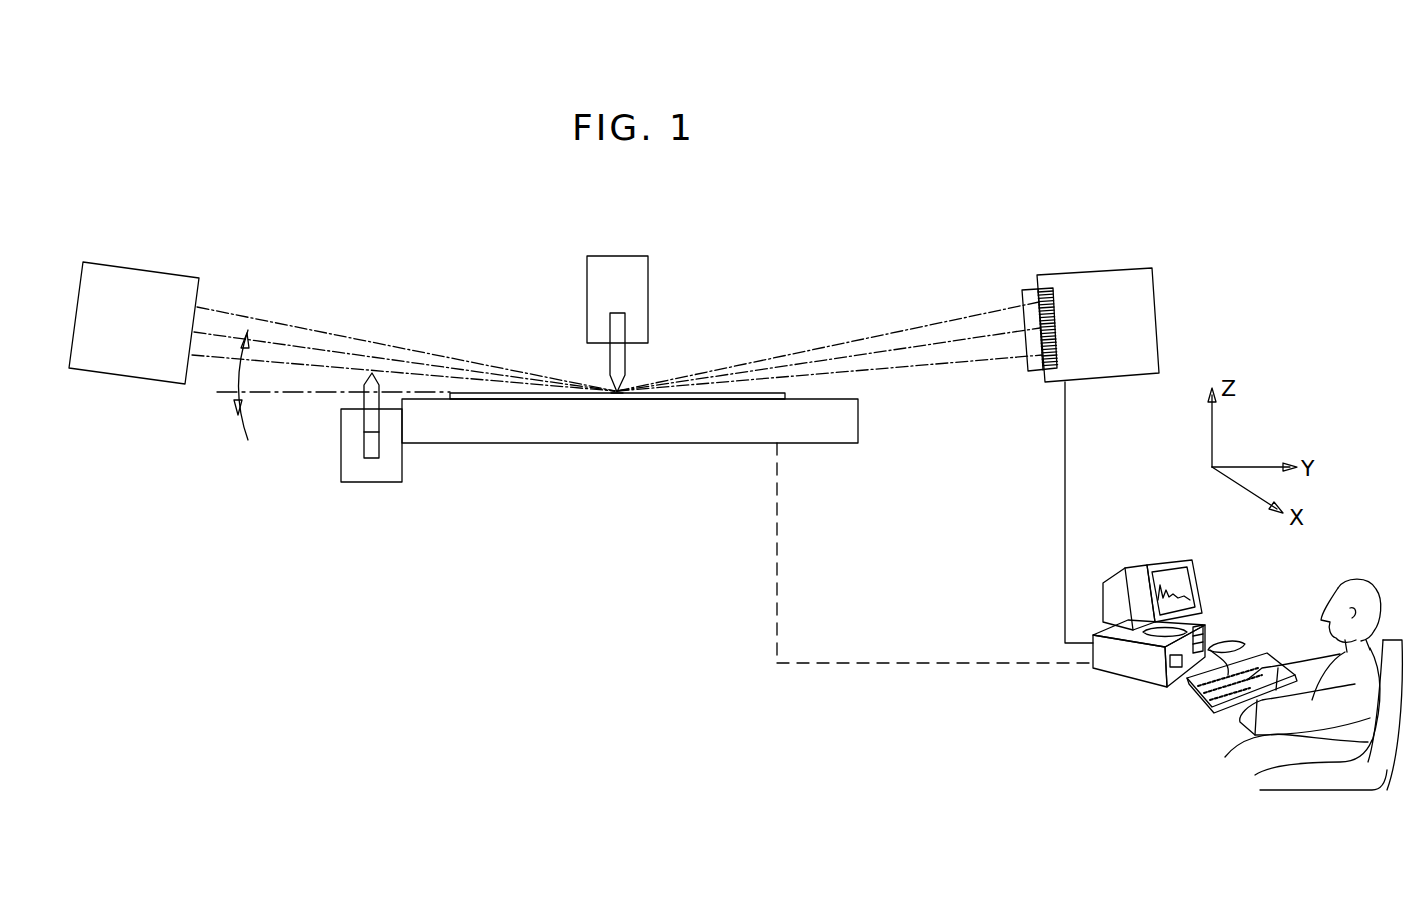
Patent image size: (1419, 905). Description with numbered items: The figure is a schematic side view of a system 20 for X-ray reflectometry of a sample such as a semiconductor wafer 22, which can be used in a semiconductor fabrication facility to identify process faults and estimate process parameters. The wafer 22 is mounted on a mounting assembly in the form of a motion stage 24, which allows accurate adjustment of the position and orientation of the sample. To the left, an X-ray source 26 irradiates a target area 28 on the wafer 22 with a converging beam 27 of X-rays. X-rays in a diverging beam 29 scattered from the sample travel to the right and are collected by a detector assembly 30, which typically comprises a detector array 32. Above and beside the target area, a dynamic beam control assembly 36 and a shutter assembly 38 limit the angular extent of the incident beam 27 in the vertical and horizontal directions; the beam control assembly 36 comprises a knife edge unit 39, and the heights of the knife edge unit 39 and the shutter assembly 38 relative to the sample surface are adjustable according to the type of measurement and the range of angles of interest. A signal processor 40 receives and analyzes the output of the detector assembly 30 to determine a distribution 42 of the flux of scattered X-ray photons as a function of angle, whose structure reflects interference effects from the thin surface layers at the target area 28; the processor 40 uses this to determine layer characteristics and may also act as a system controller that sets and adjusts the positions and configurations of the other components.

The system 20 is at (348, 75).
The semiconductor wafer 22 is at (750, 389).
The motion stage 24 is at (860, 418).
The X-ray source 26 is at (146, 271).
The converging beam 27 is at (318, 332).
The target area 28 is at (607, 398).
The diverging beam 29 is at (903, 333).
The detector assembly 30 is at (1157, 300).
The detector array 32 is at (1054, 322).
The dynamic beam control assembly 36 is at (635, 270).
The shutter assembly 38 is at (373, 377).
The knife edge unit 39 is at (620, 362).
The signal processor 40 is at (1143, 670).
The distribution 42 is at (1162, 580).